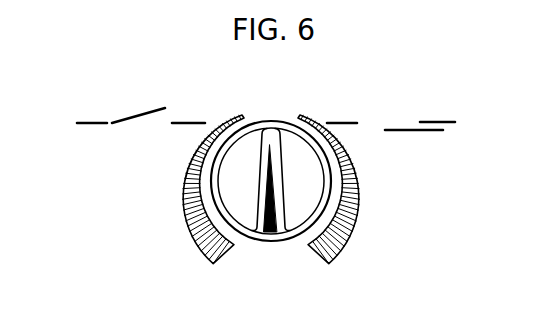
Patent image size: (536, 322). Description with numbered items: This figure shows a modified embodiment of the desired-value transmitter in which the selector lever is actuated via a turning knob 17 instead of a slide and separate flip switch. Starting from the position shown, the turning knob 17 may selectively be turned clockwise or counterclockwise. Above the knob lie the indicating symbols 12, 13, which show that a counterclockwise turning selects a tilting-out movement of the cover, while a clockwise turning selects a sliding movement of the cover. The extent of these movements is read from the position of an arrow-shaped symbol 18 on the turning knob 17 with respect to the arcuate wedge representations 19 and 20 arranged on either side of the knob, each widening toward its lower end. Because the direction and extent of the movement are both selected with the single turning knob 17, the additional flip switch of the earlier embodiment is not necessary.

The indicating symbol 12 is at (148, 134).
The indicating symbol 13 is at (373, 111).
The turning knob 17 is at (308, 170).
The arrow-shaped symbol 18 is at (271, 235).
The wedge representation 19 is at (202, 220).
The wedge representation 20 is at (341, 226).